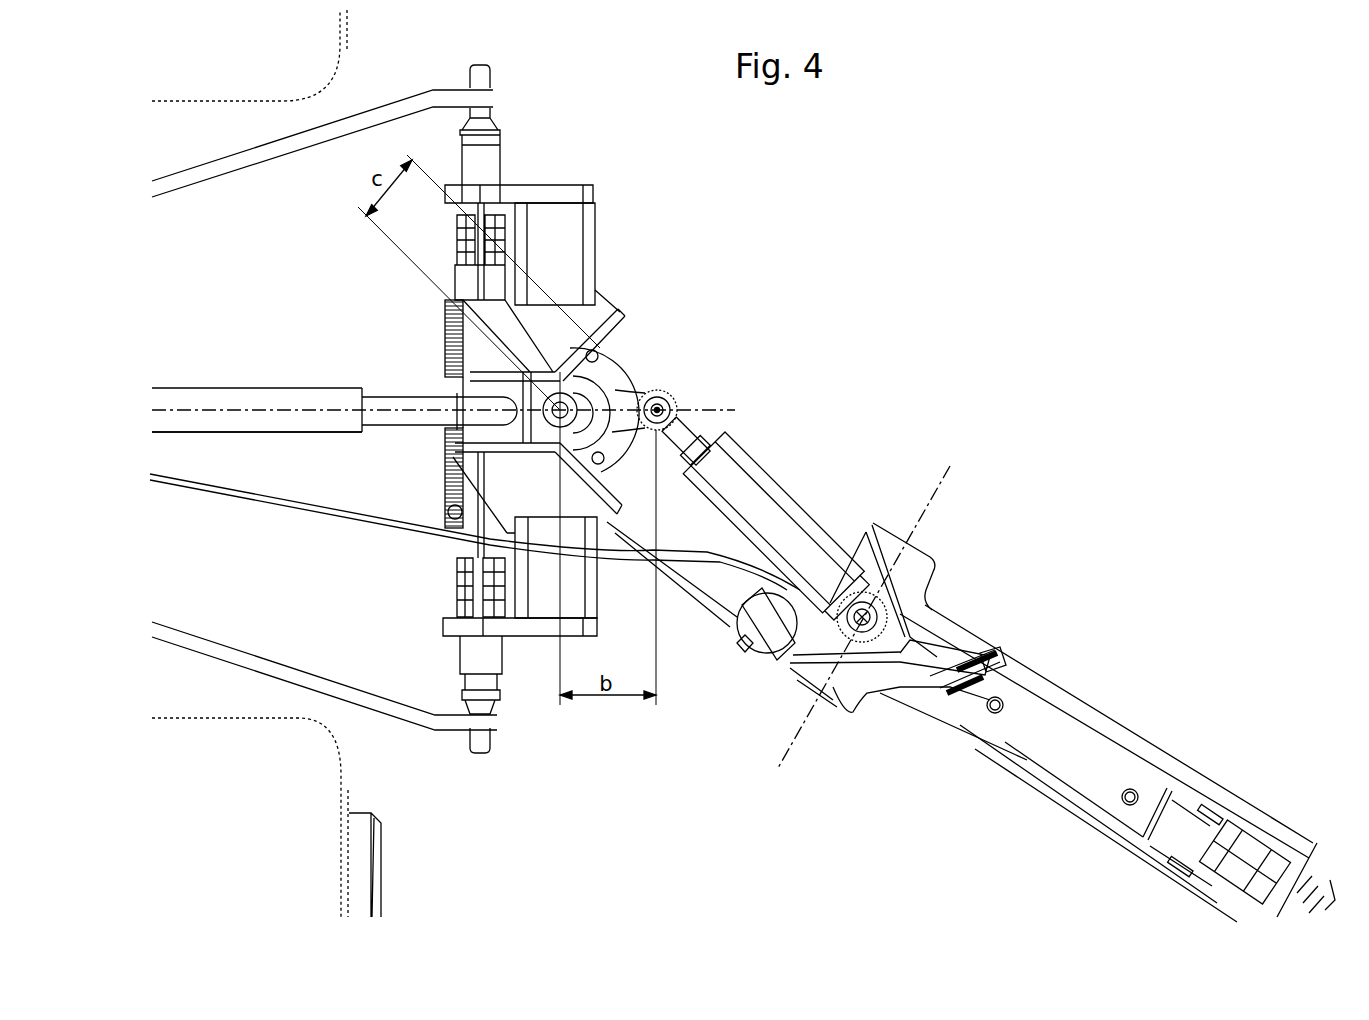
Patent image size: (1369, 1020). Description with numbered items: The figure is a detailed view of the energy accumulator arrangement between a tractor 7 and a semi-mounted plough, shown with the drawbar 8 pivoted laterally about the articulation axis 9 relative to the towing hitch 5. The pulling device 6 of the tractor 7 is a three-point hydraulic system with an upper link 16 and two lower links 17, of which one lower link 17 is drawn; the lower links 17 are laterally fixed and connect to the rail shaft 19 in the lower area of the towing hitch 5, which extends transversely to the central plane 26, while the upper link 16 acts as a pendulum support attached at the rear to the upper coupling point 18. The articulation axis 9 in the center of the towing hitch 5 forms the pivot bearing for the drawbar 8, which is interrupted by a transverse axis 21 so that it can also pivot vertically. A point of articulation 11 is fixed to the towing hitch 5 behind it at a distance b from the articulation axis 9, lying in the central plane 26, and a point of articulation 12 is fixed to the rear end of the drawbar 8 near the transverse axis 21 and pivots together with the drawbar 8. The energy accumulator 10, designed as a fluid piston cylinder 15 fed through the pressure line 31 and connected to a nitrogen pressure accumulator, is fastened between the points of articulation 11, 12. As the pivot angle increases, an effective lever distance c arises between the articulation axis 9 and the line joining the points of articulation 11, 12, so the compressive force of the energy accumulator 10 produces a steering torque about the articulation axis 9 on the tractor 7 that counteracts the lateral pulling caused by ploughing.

The towing hitch 5 is at (557, 223).
The pulling device 6 is at (390, 705).
The tractor 7 is at (313, 867).
The drawbar 8 is at (792, 518).
The articulation axis 9 is at (618, 355).
The energy accumulator 10 is at (846, 522).
The point of articulation 11 is at (667, 392).
The point of articulation 12 is at (890, 605).
The fluid piston cylinder 15 is at (787, 523).
The upper link 16 is at (315, 433).
The lower link 17 is at (347, 130).
The upper coupling point 18 is at (600, 313).
The rail shaft 19 is at (487, 652).
The transverse axis 21 is at (950, 466).
The central plane 26 is at (186, 410).
The pressure line 31 is at (355, 508).